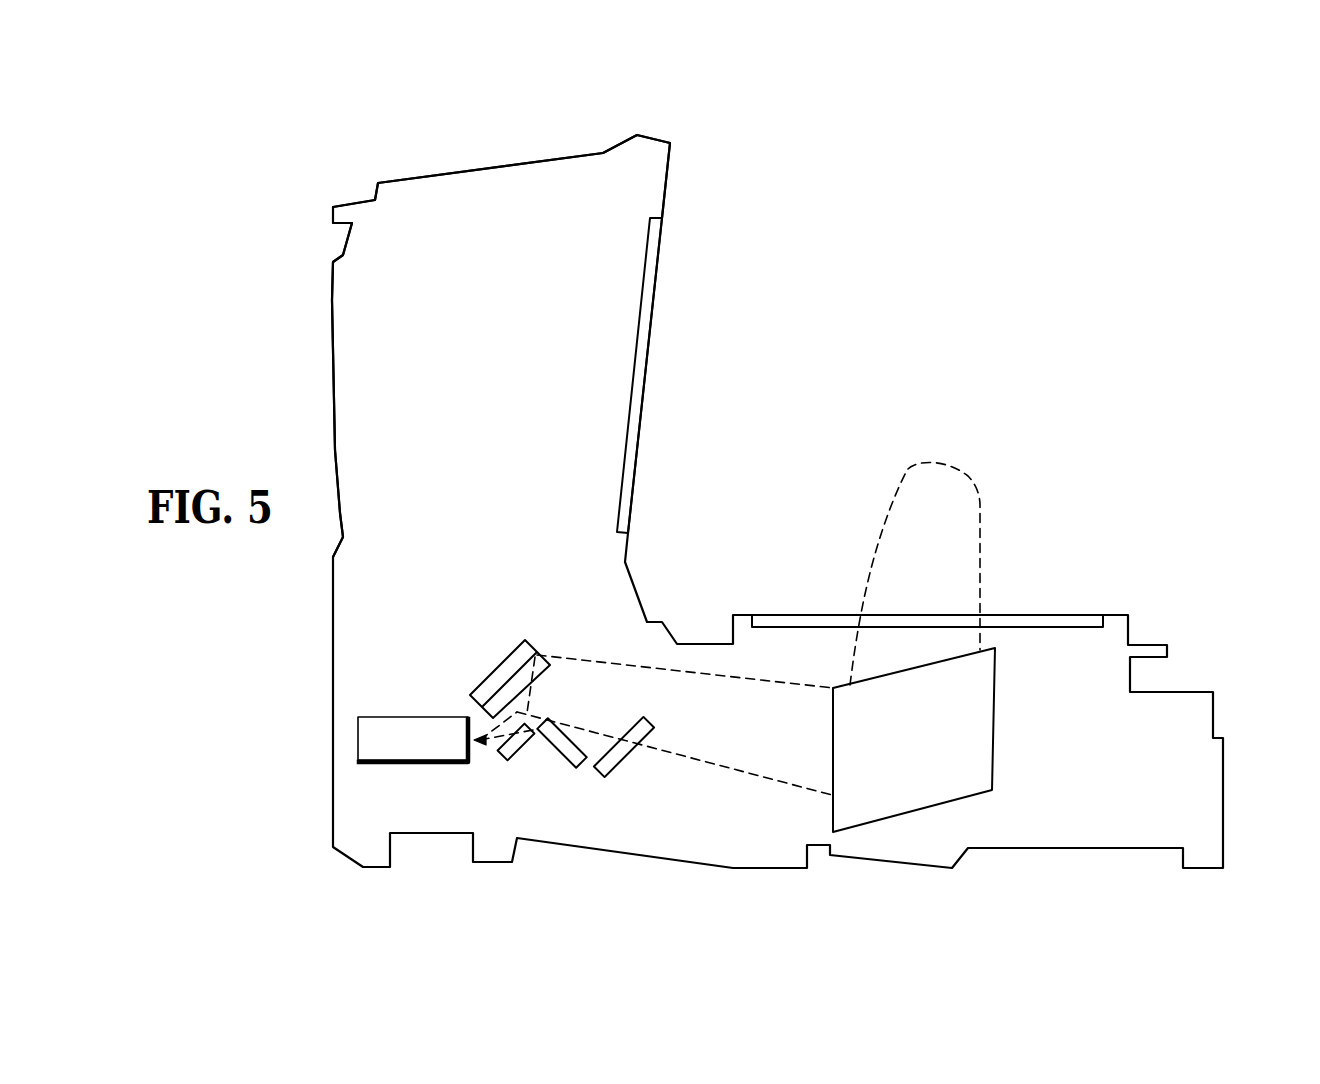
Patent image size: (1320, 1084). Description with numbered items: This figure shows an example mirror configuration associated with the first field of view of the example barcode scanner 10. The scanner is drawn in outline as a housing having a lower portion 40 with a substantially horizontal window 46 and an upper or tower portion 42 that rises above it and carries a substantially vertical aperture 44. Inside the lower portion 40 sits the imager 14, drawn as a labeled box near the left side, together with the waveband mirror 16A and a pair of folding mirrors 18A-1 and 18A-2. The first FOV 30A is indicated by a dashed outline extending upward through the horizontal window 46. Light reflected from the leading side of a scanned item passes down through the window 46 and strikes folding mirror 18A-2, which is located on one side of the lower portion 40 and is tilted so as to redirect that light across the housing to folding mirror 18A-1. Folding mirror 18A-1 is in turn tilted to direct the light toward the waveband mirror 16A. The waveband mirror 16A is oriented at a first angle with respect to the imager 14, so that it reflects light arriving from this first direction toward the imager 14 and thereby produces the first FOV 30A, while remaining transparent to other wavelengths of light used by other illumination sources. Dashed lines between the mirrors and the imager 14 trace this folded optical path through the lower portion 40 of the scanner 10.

The barcode scanner 10 is at (1172, 144).
The imager 14 is at (407, 768).
The waveband mirror 16A is at (517, 753).
The folding mirror 18A-1 is at (497, 667).
The folding mirror 18A-2 is at (967, 798).
The first FOV 30A is at (968, 482).
The lower portion 40 is at (333, 682).
The upper or tower portion 42 is at (332, 327).
The substantially vertical aperture 44 is at (658, 260).
The substantially horizontal window 46 is at (1053, 615).